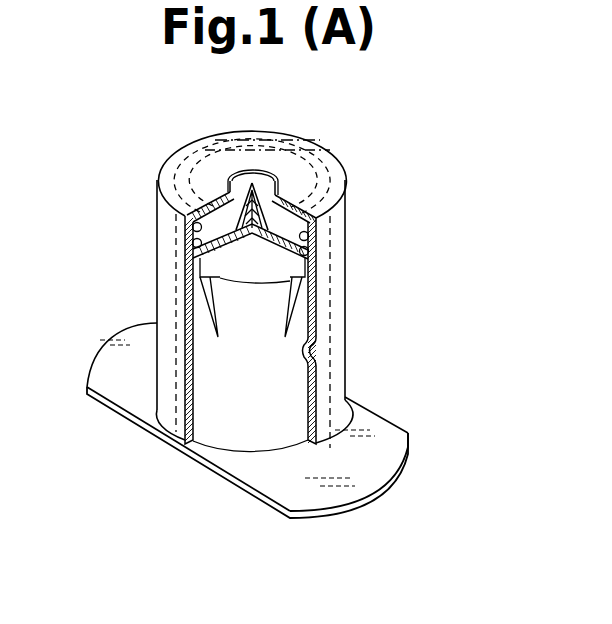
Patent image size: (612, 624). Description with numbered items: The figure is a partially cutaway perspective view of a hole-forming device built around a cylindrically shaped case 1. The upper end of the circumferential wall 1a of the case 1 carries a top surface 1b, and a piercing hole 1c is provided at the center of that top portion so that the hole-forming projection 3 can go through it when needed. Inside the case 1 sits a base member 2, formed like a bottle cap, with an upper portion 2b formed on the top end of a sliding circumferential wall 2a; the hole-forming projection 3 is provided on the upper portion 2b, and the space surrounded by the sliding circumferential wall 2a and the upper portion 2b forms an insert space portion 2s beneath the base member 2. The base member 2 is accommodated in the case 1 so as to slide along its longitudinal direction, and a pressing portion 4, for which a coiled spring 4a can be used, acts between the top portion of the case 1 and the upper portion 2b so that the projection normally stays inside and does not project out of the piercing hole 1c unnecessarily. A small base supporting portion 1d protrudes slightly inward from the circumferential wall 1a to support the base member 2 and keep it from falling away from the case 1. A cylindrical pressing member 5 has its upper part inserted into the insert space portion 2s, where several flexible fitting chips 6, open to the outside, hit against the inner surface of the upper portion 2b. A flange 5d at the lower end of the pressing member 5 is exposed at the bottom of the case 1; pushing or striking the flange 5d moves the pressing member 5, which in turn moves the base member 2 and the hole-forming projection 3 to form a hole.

The case 1 is at (151, 222).
The circumferential wall 1a is at (187, 308).
The top surface 1b is at (305, 152).
The piercing hole 1c is at (264, 170).
The base supporting portion 1d is at (318, 347).
The base member 2 is at (279, 179).
The sliding circumferential wall 2a is at (208, 338).
The upper portion 2b is at (228, 243).
The insert space portion 2s is at (265, 257).
The hole-forming projection 3 is at (230, 174).
The pressing portion 4 is at (315, 176).
The coiled spring 4a is at (326, 183).
The pressing member 5 is at (233, 431).
The flange 5d is at (372, 486).
The fitting chips 6 is at (190, 292).